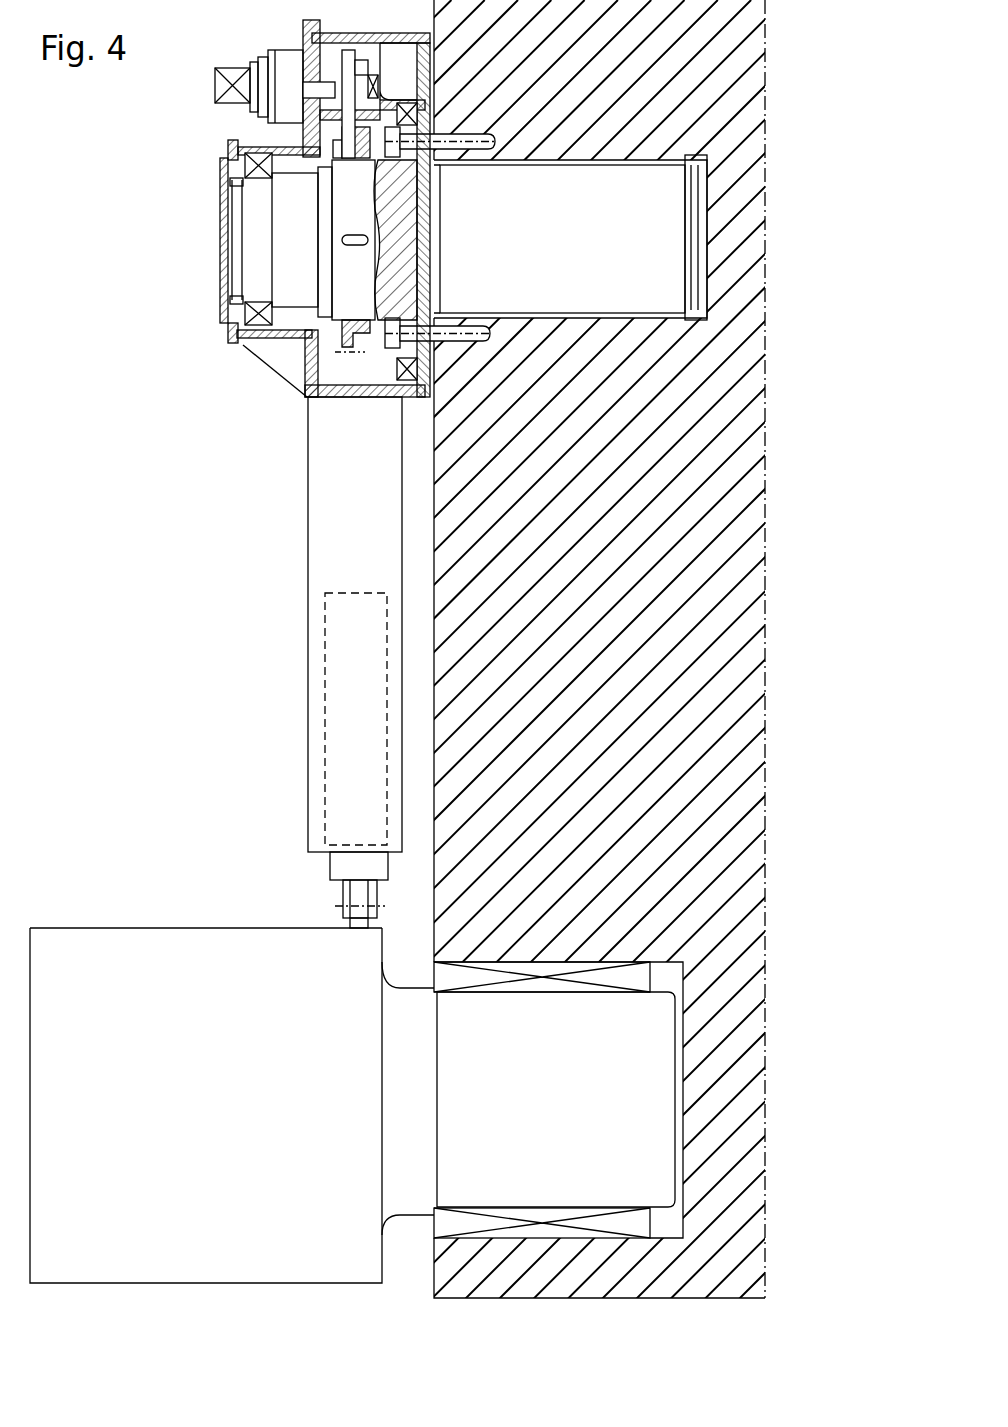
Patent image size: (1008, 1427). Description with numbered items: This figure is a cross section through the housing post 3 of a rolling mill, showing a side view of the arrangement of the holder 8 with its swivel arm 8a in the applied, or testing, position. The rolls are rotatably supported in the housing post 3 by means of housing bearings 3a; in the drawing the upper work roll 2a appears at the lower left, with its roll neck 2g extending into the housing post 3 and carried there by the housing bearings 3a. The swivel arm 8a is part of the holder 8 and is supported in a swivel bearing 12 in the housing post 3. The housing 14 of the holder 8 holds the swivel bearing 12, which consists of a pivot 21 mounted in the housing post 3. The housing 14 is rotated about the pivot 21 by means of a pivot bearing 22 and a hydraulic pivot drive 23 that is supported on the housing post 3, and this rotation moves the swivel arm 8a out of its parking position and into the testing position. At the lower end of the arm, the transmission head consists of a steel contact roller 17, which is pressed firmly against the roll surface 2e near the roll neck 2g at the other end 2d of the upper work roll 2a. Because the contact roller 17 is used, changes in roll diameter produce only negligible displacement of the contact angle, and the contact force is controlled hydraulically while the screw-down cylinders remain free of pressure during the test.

The upper work roll 2a is at (145, 965).
The other end of the roll 2d is at (350, 998).
The roll surface 2e is at (112, 928).
The roll neck 2g is at (648, 1063).
The housing post 3 is at (697, 93).
The housing bearing 3a is at (640, 975).
The holder 8 is at (340, 532).
The swivel arm 8a is at (330, 628).
The swivel bearing 12 is at (212, 234).
The housing 14 is at (307, 397).
The contact roller 17 is at (345, 908).
The pivot 21 is at (647, 210).
The pivot bearing 22 is at (257, 343).
The hydraulic pivot drive 23 is at (226, 118).